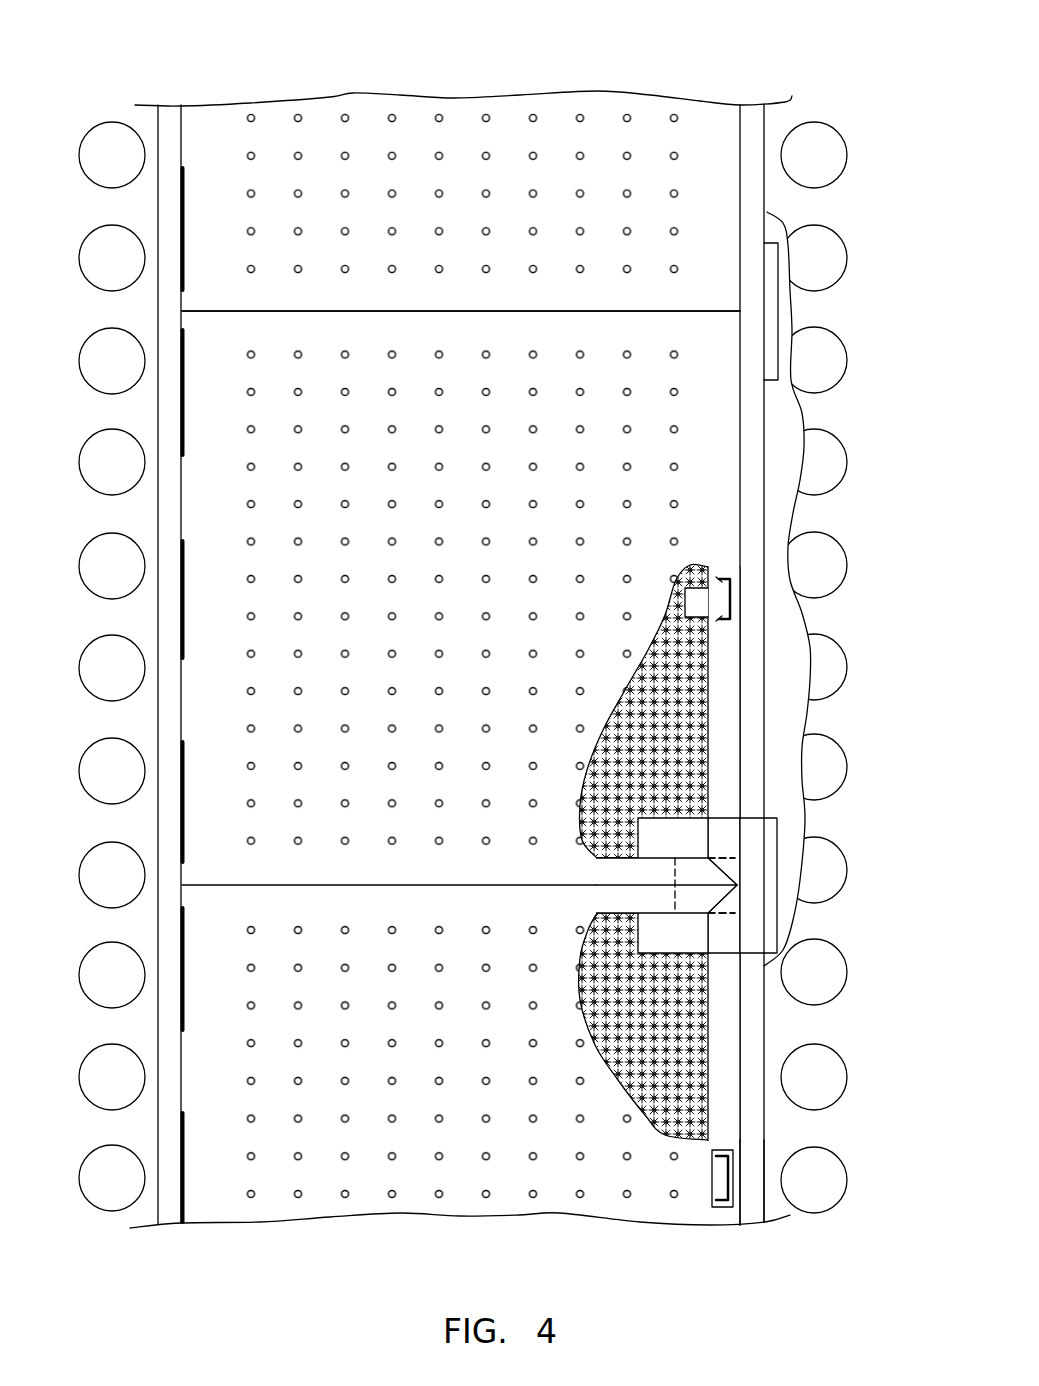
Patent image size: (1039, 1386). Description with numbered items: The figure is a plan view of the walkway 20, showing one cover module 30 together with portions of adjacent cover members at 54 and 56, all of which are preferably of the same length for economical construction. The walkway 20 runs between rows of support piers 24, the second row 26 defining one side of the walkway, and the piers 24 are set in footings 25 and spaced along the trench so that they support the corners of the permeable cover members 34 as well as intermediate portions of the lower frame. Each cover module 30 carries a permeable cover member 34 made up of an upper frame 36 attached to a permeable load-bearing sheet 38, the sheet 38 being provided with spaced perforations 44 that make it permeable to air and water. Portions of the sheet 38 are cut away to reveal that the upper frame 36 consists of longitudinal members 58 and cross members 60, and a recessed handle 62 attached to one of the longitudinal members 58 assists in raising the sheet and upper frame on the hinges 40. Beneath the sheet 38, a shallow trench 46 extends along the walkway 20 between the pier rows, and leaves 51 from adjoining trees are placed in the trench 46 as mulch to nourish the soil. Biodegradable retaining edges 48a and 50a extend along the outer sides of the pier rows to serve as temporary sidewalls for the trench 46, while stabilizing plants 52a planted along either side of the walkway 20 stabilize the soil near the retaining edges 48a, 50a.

The walkway 20 is at (461, 656).
The support piers 24 is at (690, 857).
The footings 25 is at (771, 321).
The second row 26 is at (820, 925).
The cover module 30 is at (668, 82).
The permeable cover member 34 is at (700, 425).
The upper frame 36 is at (727, 718).
The permeable load-bearing sheet 38 is at (208, 340).
The hinges 40 is at (178, 398).
The perforations 44 is at (441, 196).
The shallow trench 46 is at (706, 758).
The retaining edge 48a is at (168, 1010).
The retaining edge 50a is at (750, 1127).
The leaves 51 is at (612, 712).
The stabilizing plants 52a is at (825, 262).
The portion of adjacent cover member 54 is at (492, 88).
The portion of adjacent cover member 56 is at (532, 1225).
The longitudinal members 58 is at (727, 650).
The cross members 60 is at (695, 603).
The recessed handle 62 is at (735, 580).